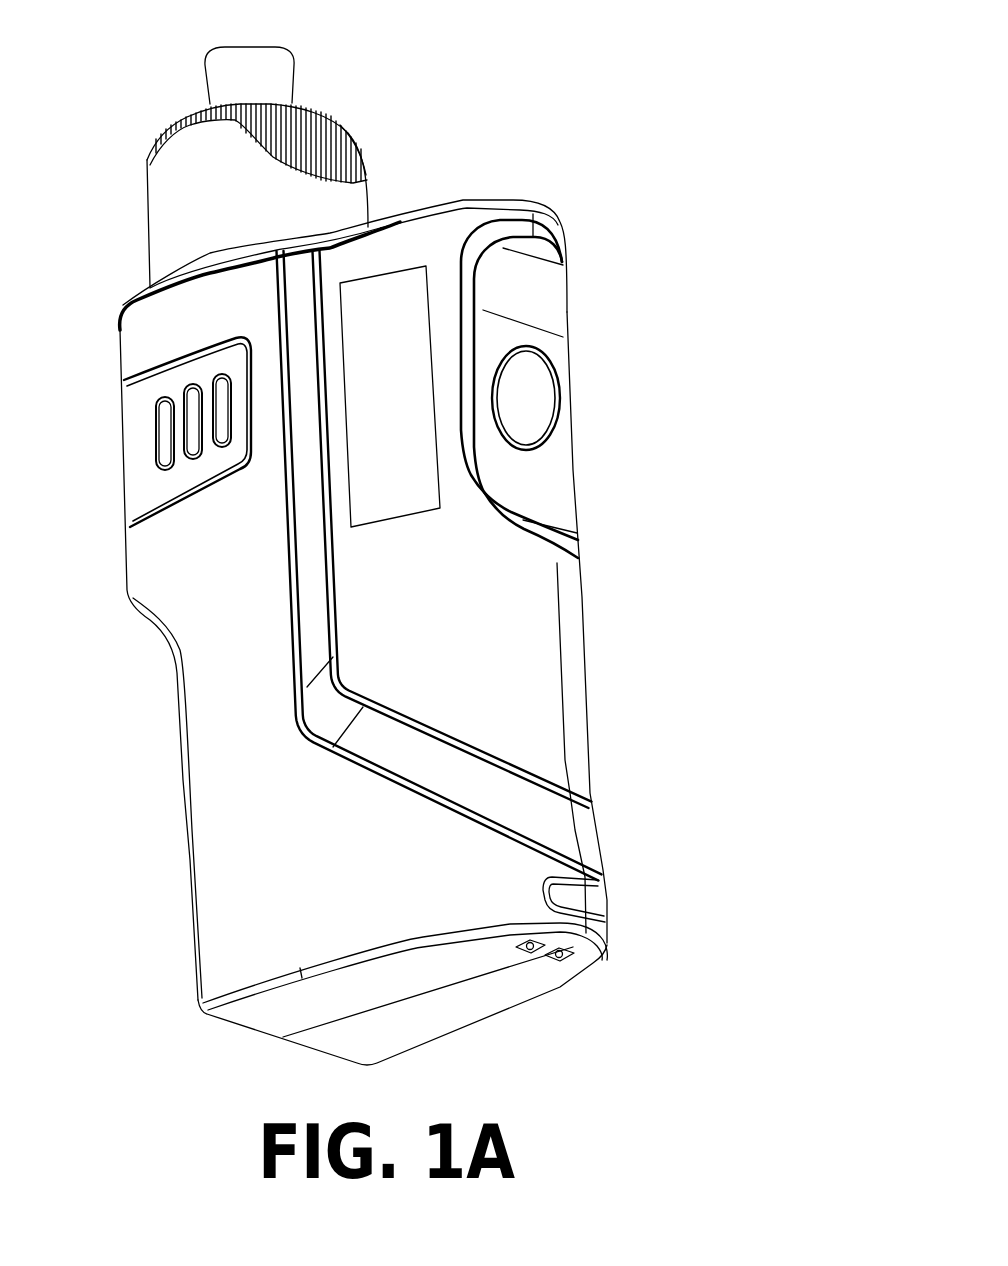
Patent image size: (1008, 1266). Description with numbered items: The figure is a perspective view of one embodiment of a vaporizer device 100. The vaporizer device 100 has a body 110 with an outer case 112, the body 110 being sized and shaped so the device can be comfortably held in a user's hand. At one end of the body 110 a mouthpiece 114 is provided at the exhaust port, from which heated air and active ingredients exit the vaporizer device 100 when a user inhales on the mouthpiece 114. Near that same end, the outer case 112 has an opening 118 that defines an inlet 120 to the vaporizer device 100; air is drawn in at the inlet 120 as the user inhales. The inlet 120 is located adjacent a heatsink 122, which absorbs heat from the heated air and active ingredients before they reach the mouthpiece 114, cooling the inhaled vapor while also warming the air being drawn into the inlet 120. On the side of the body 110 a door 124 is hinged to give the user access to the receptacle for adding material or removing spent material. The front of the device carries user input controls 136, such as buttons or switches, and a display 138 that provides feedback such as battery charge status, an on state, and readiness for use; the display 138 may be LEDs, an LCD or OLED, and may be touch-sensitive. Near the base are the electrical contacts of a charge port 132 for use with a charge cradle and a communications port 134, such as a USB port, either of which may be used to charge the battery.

The vaporizer device 100 is at (697, 840).
The body 110 is at (215, 913).
The outer case 112 is at (182, 787).
The mouthpiece 114 is at (282, 50).
The opening 118 is at (290, 155).
The inlet 120 is at (130, 165).
The heatsink 122 is at (350, 177).
The door 124 is at (147, 462).
The charge port 132 is at (573, 963).
The communications port 134 is at (587, 903).
The user input controls 136 is at (535, 390).
The display 138 is at (403, 297).